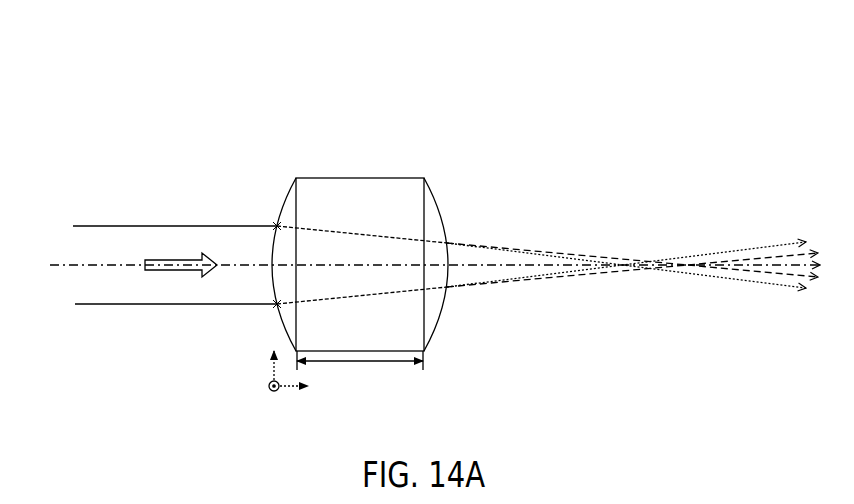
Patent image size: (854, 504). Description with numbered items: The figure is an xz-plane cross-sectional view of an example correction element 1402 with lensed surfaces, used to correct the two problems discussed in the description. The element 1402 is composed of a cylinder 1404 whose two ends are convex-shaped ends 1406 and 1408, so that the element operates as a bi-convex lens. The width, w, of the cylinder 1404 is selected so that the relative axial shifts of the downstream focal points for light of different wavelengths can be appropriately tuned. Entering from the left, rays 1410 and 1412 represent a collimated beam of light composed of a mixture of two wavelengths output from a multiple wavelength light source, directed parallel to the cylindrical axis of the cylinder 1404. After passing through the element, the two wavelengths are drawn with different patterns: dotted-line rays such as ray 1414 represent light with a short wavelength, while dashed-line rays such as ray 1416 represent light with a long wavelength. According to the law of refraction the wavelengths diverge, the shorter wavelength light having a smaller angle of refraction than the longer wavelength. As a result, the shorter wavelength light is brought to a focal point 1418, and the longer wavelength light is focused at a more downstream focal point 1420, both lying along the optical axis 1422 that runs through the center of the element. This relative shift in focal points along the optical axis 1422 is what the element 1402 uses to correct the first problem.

The correction element 1402 is at (468, 90).
The cylinder 1404 is at (375, 178).
The convex-shaped end 1406 is at (288, 202).
The convex-shaped end 1408 is at (439, 208).
The ray 1410 is at (122, 225).
The ray 1412 is at (120, 305).
The ray 1414 is at (760, 252).
The ray 1416 is at (782, 282).
The focal point 1418 is at (612, 262).
The focal point 1420 is at (690, 265).
The optical axis 1422 is at (73, 267).